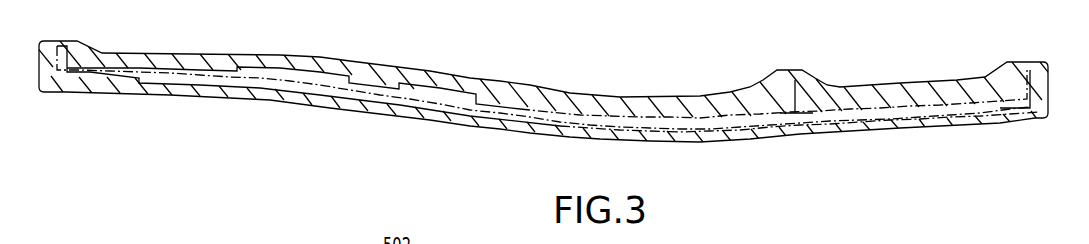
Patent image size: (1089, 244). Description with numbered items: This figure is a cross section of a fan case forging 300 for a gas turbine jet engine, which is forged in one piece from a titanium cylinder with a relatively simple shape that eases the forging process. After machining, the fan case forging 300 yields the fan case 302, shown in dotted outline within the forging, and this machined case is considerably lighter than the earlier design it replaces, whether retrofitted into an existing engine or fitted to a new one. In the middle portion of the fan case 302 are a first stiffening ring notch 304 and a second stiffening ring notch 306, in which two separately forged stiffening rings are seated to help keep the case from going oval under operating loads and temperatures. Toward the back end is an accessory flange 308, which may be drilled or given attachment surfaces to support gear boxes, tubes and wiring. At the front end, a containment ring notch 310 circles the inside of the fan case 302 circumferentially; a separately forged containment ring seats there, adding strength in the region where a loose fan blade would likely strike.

The fan case forging 300 is at (953, 80).
The fan case 302 is at (880, 107).
The first stiffening ring notch 304 is at (378, 92).
The second stiffening ring notch 306 is at (497, 103).
The accessory flange 308 is at (795, 80).
The containment ring notch 310 is at (210, 84).